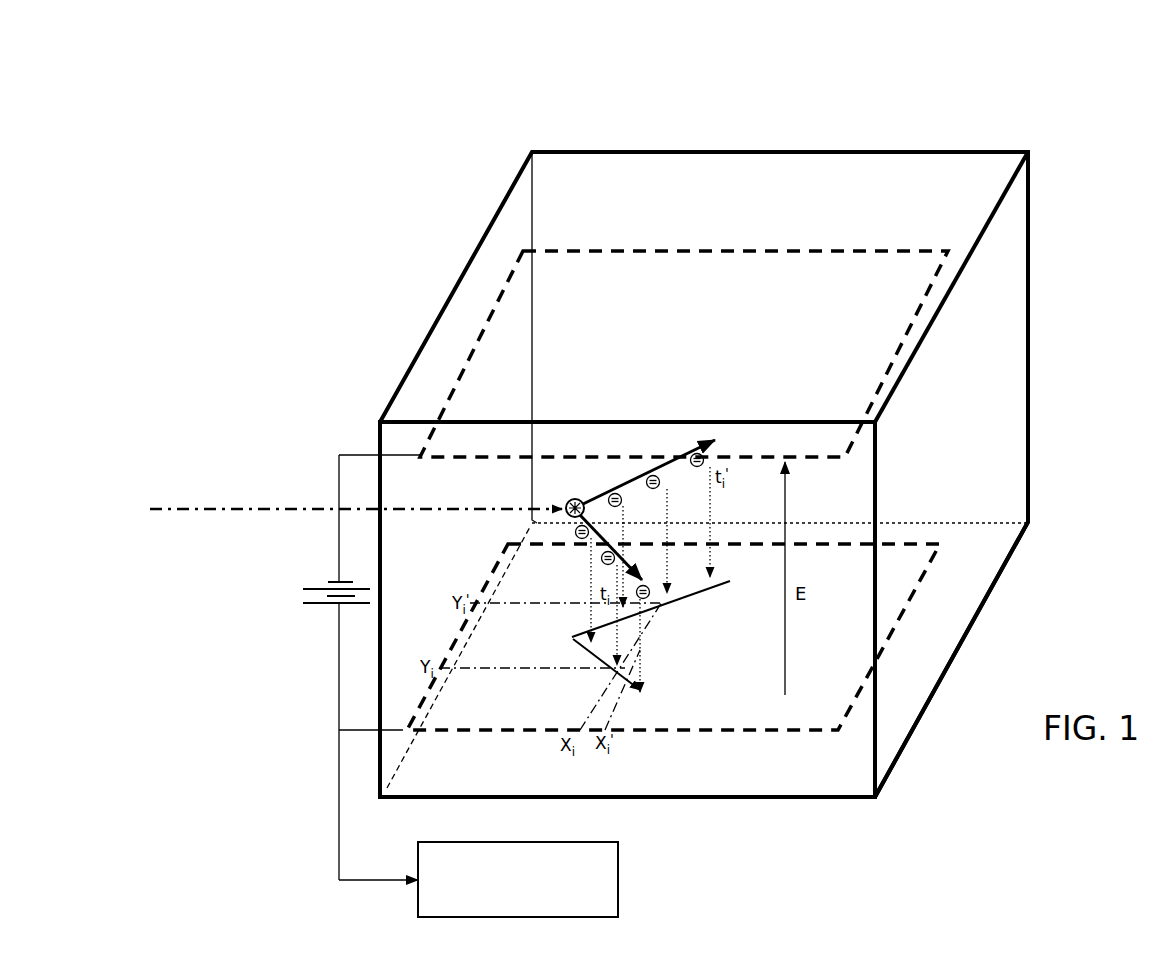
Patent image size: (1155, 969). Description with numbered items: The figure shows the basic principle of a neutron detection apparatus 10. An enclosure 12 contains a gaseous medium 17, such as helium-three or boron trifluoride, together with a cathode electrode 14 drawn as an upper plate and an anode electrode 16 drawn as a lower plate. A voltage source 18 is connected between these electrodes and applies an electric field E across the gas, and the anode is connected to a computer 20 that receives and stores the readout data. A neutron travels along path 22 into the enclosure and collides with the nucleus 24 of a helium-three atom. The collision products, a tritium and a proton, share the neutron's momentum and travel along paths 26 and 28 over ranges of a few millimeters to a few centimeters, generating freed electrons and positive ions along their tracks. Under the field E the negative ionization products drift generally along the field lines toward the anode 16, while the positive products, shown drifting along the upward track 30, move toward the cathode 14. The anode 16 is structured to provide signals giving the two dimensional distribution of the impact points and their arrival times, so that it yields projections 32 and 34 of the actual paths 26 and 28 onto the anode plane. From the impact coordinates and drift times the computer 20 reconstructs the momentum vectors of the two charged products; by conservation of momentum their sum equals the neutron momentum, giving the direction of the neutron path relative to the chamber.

The apparatus 10 is at (739, 418).
The enclosure 12 is at (710, 152).
The cathode electrode 14 is at (563, 268).
The anode electrode 16 is at (918, 568).
The gaseous medium 17 is at (928, 418).
The voltage source 18 is at (343, 667).
The computer 20 is at (478, 879).
The path 22 is at (283, 510).
The nucleus 24 is at (567, 502).
The path 26 is at (630, 473).
The path 28 is at (590, 543).
The electron drift path 30 is at (698, 448).
The two dimensional projection 32 is at (693, 590).
The two dimensional projection 34 is at (622, 675).